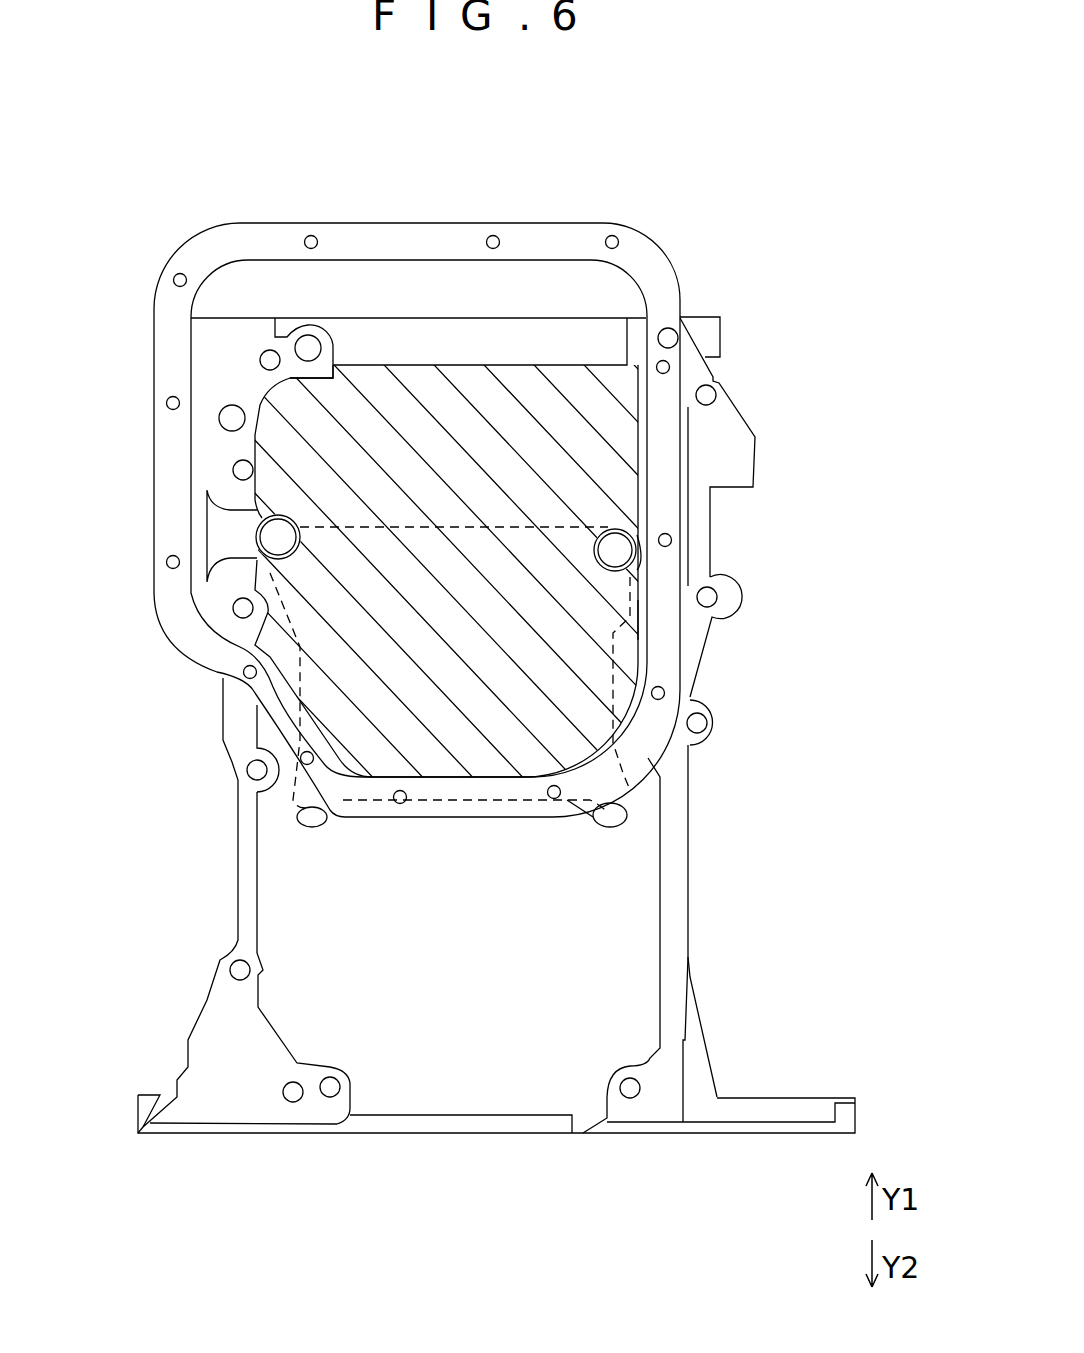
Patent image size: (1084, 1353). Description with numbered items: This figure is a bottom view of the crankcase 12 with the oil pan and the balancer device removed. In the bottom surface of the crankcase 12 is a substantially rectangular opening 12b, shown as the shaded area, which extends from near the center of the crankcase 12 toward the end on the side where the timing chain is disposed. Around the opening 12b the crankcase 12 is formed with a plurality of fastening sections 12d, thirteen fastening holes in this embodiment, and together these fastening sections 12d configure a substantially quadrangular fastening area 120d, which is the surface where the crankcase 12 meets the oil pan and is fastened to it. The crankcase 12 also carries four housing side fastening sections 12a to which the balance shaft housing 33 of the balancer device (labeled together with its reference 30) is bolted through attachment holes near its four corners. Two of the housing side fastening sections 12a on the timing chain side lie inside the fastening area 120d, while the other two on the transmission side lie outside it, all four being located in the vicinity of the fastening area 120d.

The crankcase 12 is at (531, 675).
The housing side fastening sections 12a is at (256, 535).
The opening 12b is at (613, 638).
The fastening sections 12d is at (180, 280).
The fastening area 120d is at (667, 447).
The balance shaft housing 33 is at (630, 790).
The cover 30 is at (562, 668).